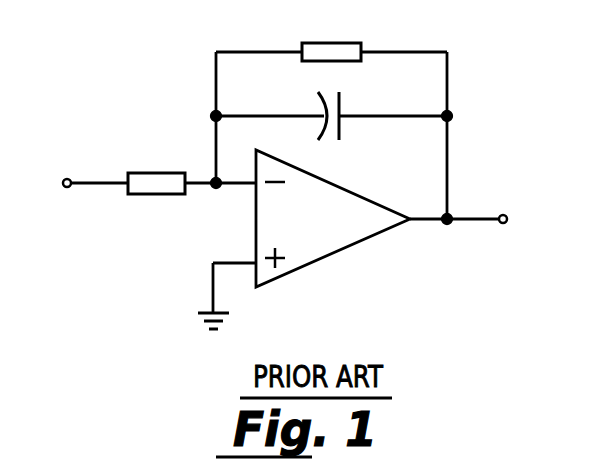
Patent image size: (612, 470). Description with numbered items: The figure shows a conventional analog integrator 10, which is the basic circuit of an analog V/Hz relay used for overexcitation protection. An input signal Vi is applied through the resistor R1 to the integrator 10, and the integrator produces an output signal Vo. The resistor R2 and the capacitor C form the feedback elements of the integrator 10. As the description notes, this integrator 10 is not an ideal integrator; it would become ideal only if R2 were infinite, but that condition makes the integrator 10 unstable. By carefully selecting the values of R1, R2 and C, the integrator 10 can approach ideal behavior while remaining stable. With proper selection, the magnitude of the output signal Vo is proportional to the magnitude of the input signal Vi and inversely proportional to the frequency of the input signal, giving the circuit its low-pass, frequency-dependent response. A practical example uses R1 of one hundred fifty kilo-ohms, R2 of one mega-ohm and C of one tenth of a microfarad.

The analog integrator 10 is at (372, 255).
The input resistor R1 is at (156, 164).
The feedback resistor R2 is at (331, 30).
The capacitor C is at (346, 107).
The input signal Vi is at (62, 161).
The output signal Vo is at (505, 198).